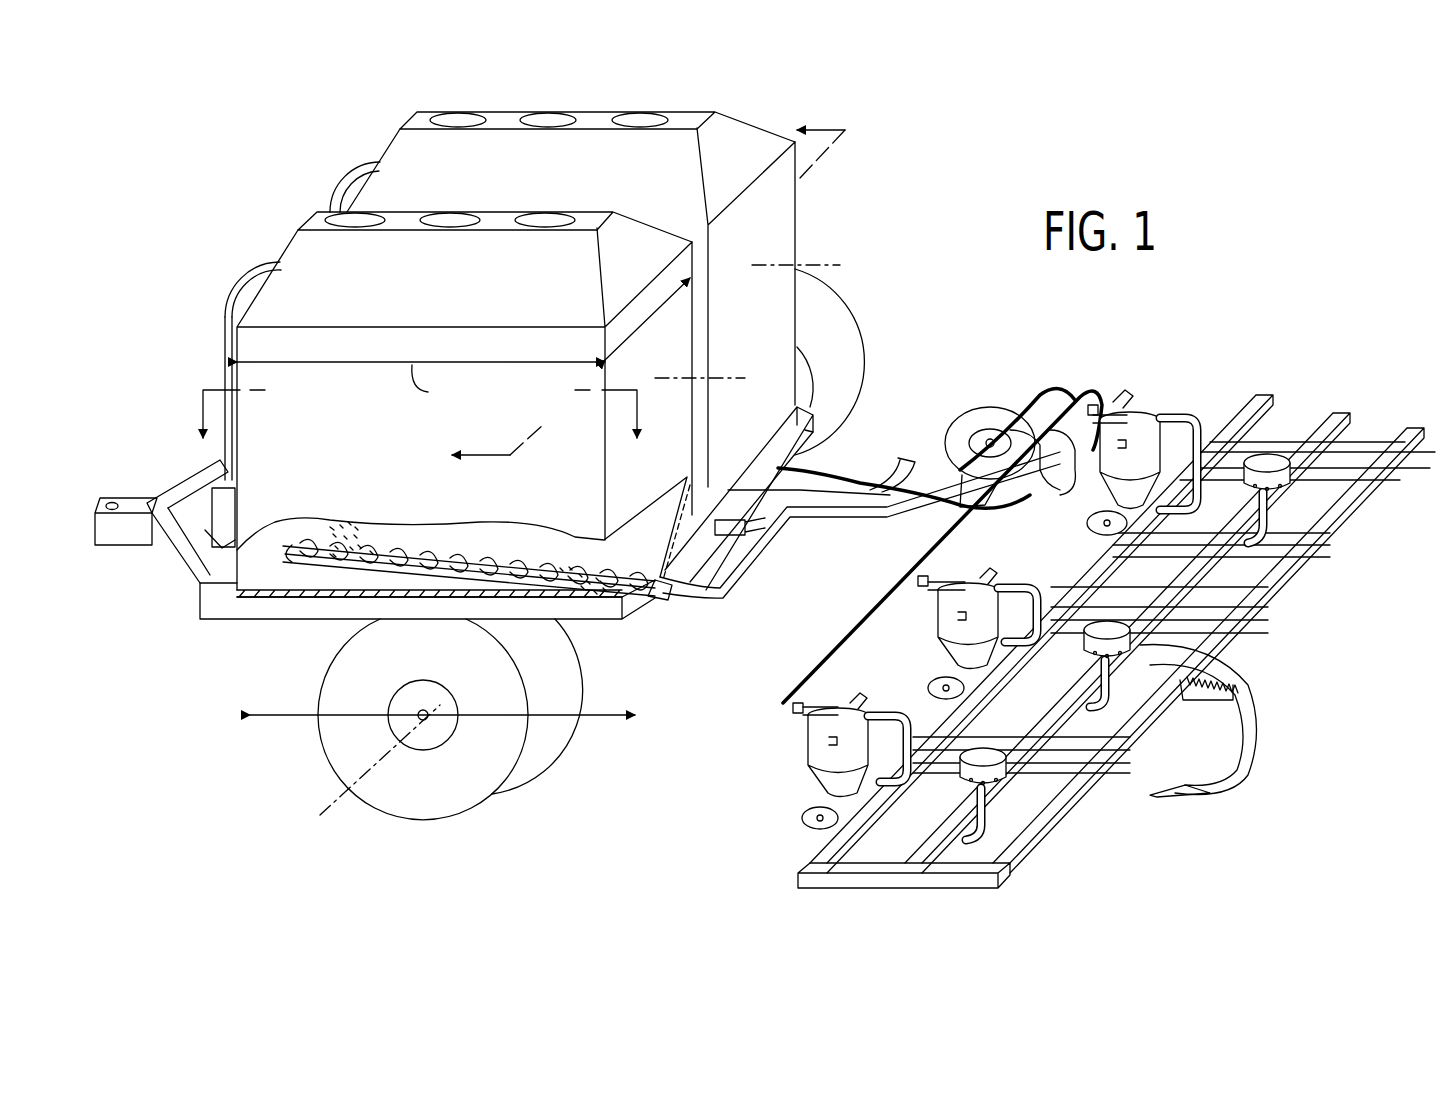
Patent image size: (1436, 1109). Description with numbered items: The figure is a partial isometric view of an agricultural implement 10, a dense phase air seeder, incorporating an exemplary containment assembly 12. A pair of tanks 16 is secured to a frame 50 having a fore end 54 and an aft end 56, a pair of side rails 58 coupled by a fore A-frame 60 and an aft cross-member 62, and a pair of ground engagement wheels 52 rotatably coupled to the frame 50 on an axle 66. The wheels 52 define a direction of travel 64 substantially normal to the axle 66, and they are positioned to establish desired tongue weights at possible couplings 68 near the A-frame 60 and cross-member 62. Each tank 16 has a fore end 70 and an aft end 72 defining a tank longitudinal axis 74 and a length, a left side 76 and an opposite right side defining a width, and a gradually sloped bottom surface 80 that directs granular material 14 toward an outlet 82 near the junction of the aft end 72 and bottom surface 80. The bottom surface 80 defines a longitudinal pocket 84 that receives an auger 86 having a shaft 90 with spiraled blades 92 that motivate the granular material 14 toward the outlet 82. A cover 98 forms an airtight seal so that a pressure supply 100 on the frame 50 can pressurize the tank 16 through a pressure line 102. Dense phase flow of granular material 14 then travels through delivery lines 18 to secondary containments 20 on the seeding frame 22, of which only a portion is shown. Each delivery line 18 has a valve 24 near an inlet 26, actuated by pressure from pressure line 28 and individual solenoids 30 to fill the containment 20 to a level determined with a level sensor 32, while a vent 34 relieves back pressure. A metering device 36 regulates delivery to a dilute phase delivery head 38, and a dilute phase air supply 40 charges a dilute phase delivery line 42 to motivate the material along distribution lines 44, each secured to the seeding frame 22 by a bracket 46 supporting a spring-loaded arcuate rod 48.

The agricultural implement 10 is at (1325, 250).
The containment assembly 12 is at (762, 103).
The granular material 14 is at (380, 540).
The tanks 16 is at (682, 283).
The delivery lines 18 is at (700, 608).
The secondary containments 20 is at (1160, 440).
The seeding frame 22 is at (1088, 808).
The valve 24 is at (1152, 408).
The inlet 26 is at (1127, 412).
The pressure line 28 is at (820, 482).
The solenoids 30 is at (1088, 400).
The level sensor 32 is at (1093, 420).
The vent 34 is at (1165, 420).
The metering device 36 is at (1135, 518).
The dilute phase delivery head 38 is at (1270, 460).
The dilute phase air supply 40 is at (1010, 400).
The dilute phase delivery line 42 is at (1035, 500).
The distribution lines 44 is at (1260, 712).
The bracket 46 is at (1180, 680).
The spring-loaded arcuate rod 48 is at (1238, 728).
The frame 50 is at (235, 622).
The ground engagement wheels 52 is at (330, 760).
The fore end 54 is at (190, 612).
The aft end 56 is at (812, 425).
The side rails 58 is at (352, 612).
The fore A-frame 60 is at (178, 595).
The aft cross-member 62 is at (760, 455).
The direction of travel 64 is at (300, 700).
The axle 66 is at (392, 770).
The couplings 68 is at (112, 497).
The fore end 70 is at (226, 349).
The aft end 72 is at (739, 360).
The tank longitudinal axis 74 is at (768, 268).
The left side 76 is at (682, 283).
The bottom surface 80 is at (629, 555).
The outlet 82 is at (665, 580).
The longitudinal pocket 84 is at (658, 600).
The auger 86 is at (318, 570).
The shaft 90 is at (432, 540).
The blades 92 is at (470, 548).
The cover 98 is at (494, 165).
The pressure supply 100 is at (222, 548).
The pressure line 102 is at (360, 165).